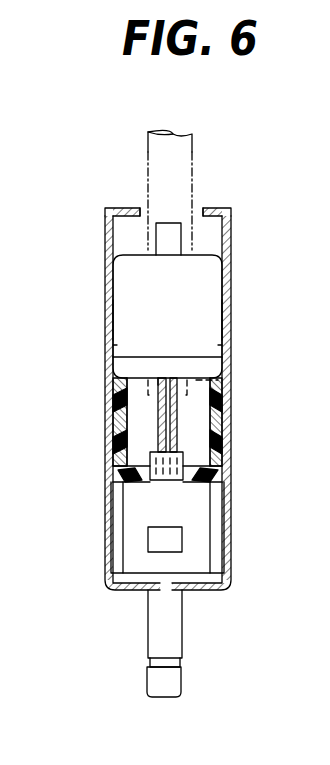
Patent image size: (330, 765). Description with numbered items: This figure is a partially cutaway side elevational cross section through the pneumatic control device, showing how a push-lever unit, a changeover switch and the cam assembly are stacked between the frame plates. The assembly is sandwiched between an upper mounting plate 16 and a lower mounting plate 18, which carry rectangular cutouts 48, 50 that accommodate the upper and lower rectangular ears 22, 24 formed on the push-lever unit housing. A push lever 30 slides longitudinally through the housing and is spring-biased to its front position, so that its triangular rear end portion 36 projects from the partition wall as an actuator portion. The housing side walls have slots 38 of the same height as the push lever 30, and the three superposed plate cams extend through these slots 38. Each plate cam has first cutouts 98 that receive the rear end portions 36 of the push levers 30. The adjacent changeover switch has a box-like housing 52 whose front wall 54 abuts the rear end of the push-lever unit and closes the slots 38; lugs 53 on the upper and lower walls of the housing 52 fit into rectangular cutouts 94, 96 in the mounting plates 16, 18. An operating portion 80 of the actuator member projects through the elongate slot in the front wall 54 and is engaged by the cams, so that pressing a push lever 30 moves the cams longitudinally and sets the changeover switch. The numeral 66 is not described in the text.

The upper mounting plate 16 is at (105, 229).
The lower mounting plate 18 is at (231, 246).
The upper rectangular ear 22 is at (110, 528).
The lower rectangular ear 24 is at (228, 517).
The push lever 30 is at (176, 648).
The rear end portion 36 is at (150, 466).
The slots 38 is at (163, 378).
The rectangular cutouts 48 is at (107, 487).
The rectangular cutouts 50 is at (232, 485).
The housing 52 is at (125, 285).
The lugs 53 is at (105, 347).
The front wall 54 is at (176, 377).
The piston rod 66 is at (193, 177).
The operating portion 80 is at (178, 386).
The rectangular cutouts 94 is at (105, 330).
The rectangular cutouts 96 is at (228, 326).
The first cutouts 98 is at (178, 440).